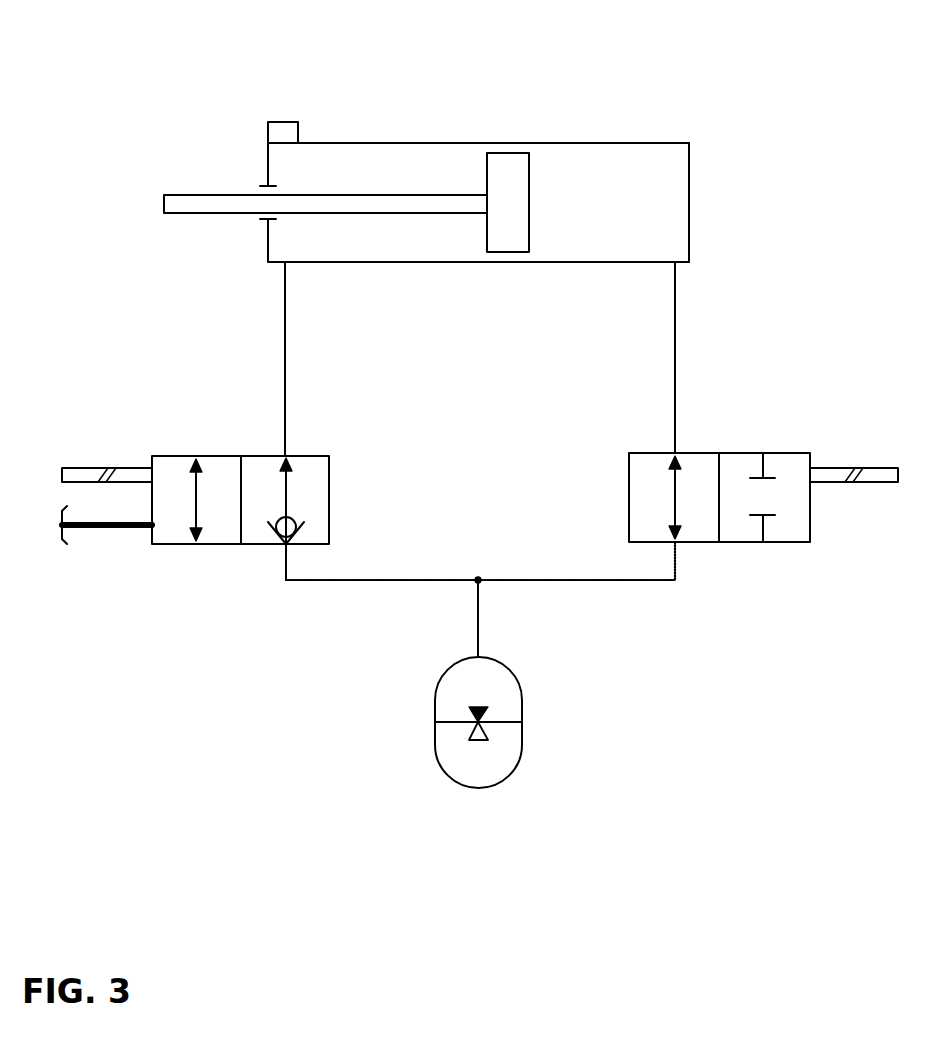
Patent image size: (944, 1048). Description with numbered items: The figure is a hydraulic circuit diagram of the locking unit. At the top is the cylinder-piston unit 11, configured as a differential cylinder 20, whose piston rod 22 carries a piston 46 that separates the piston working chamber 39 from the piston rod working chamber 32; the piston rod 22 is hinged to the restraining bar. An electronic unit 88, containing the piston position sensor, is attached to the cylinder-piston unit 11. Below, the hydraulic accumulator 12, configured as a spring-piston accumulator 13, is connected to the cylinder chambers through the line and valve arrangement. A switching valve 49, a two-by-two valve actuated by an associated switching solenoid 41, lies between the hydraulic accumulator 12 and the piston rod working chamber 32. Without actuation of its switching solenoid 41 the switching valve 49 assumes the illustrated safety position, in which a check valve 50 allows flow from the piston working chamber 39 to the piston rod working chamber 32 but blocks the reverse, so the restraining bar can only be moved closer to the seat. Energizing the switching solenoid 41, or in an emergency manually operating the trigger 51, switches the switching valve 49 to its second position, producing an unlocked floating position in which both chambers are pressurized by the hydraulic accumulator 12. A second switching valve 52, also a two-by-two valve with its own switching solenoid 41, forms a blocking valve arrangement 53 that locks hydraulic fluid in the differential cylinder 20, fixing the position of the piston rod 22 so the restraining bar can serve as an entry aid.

The cylinder-piston unit 11 is at (486, 140).
The differential cylinder 20 is at (426, 149).
The piston rod 22 is at (215, 202).
The piston rod working chamber 32 is at (388, 157).
The piston working chamber 39 is at (598, 162).
The piston 46 is at (505, 163).
The electronic unit 88 is at (285, 120).
The switching solenoid 41 is at (88, 468).
The switching valve 49 is at (237, 562).
The check valve 50 is at (272, 528).
The trigger 51 is at (103, 532).
The second switching valve 52 is at (719, 549).
The blocking valve arrangement 53 is at (774, 578).
The hydraulic accumulator 12 is at (427, 740).
The spring-piston accumulator 13 is at (478, 722).